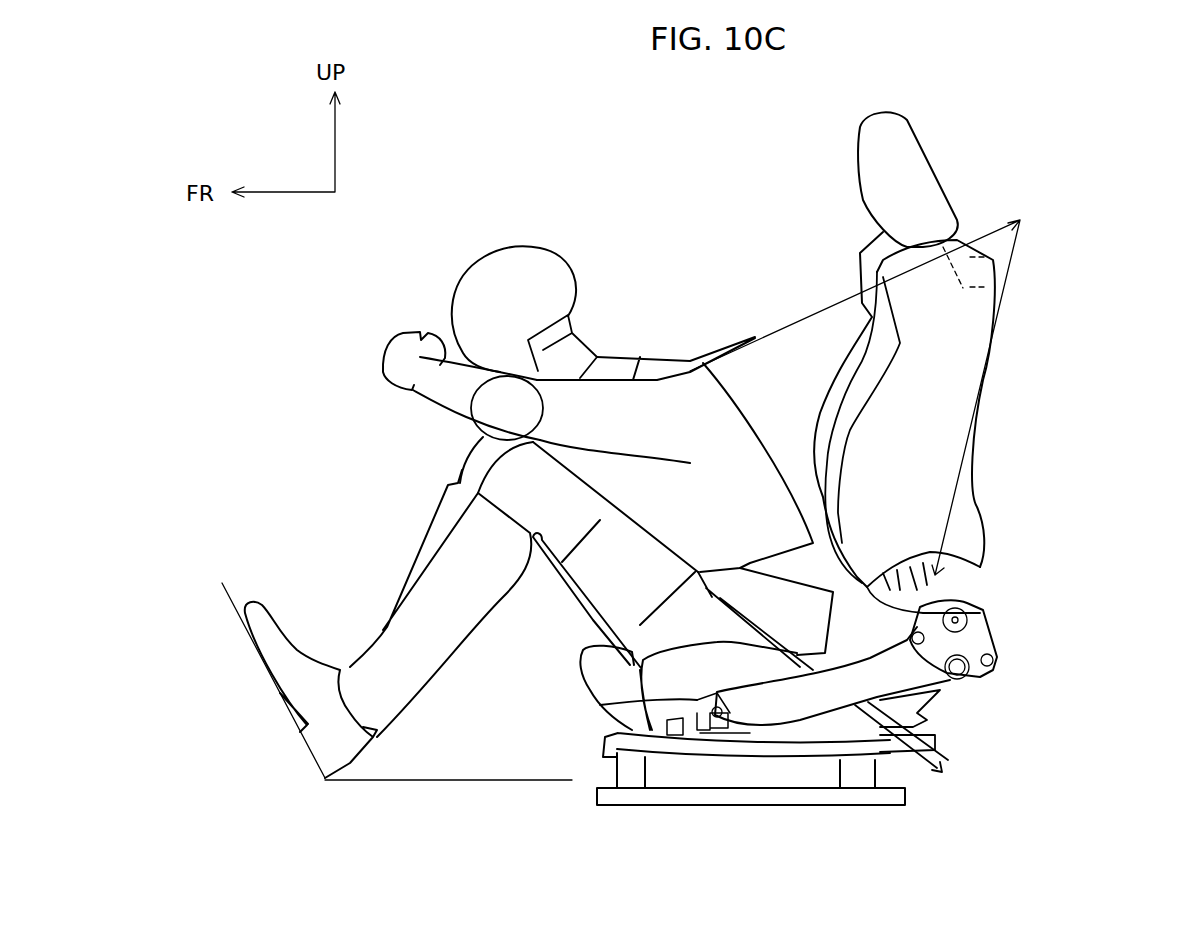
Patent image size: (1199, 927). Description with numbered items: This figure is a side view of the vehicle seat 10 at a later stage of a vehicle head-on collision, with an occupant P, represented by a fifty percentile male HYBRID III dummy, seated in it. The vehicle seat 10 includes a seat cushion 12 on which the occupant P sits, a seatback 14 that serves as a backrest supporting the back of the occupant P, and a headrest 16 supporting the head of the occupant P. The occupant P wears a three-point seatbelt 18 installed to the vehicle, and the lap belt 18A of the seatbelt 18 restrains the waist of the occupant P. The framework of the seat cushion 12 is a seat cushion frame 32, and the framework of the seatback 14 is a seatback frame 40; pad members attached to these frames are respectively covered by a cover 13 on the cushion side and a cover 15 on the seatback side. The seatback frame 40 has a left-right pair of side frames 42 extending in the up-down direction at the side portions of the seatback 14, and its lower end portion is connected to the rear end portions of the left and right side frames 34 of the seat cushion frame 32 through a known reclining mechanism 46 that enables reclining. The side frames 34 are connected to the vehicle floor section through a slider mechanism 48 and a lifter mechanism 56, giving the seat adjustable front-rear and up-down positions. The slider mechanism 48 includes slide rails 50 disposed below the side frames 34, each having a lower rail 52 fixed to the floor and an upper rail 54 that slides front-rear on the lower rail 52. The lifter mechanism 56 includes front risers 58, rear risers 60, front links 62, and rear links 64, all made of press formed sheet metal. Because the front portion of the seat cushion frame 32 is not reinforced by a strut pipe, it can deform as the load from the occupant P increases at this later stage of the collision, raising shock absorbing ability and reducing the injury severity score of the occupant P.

The vehicle seat 10 is at (1108, 266).
The seat cushion 12 is at (567, 668).
The cover 13 is at (687, 672).
The seatback 14 is at (995, 393).
The cover 15 is at (947, 447).
The headrest 16 is at (925, 160).
The three-point seatbelt 18 is at (723, 334).
The lap belt 18A is at (735, 612).
The seat cushion frame 32 is at (740, 722).
The side frames 34 is at (708, 810).
The seatback frame 40 is at (960, 580).
The side frames 42 is at (1000, 579).
The reclining mechanism 46 is at (1023, 637).
The slider mechanism 48 is at (766, 774).
The slide rails 50 is at (751, 833).
The lower rail 52 is at (807, 753).
The upper rail 54 is at (937, 745).
The lifter mechanism 56 is at (1018, 690).
The front risers 58 is at (703, 727).
The rear risers 60 is at (925, 722).
The front links 62 is at (700, 700).
The rear links 64 is at (930, 700).
The occupant P is at (493, 253).